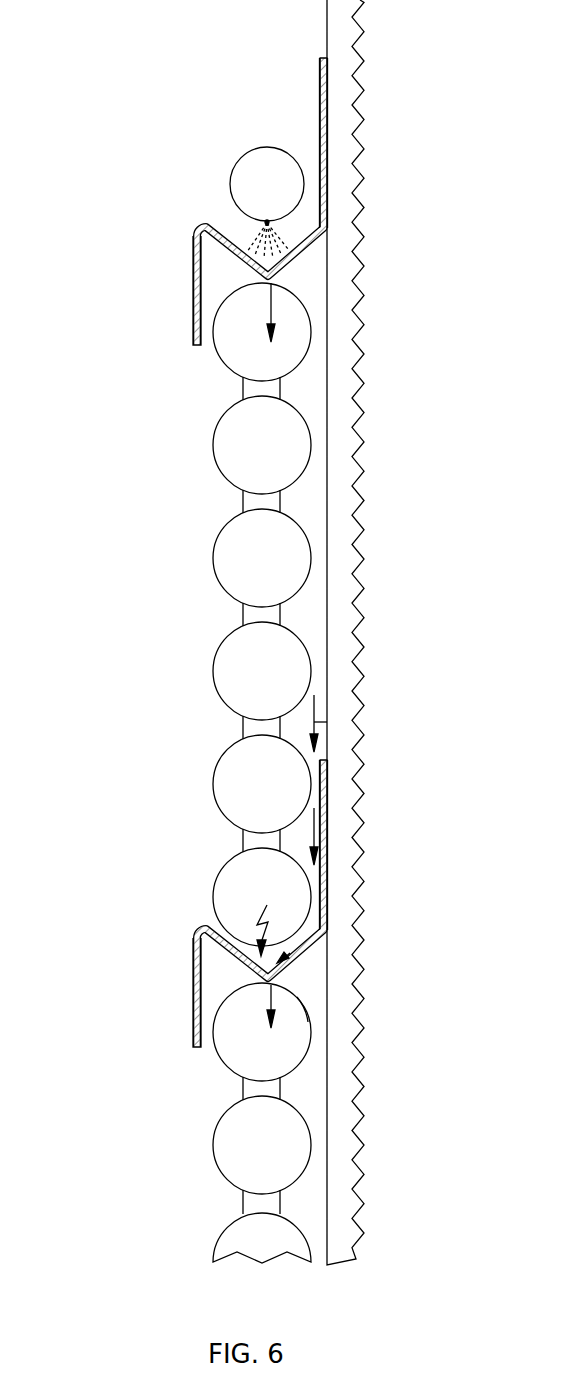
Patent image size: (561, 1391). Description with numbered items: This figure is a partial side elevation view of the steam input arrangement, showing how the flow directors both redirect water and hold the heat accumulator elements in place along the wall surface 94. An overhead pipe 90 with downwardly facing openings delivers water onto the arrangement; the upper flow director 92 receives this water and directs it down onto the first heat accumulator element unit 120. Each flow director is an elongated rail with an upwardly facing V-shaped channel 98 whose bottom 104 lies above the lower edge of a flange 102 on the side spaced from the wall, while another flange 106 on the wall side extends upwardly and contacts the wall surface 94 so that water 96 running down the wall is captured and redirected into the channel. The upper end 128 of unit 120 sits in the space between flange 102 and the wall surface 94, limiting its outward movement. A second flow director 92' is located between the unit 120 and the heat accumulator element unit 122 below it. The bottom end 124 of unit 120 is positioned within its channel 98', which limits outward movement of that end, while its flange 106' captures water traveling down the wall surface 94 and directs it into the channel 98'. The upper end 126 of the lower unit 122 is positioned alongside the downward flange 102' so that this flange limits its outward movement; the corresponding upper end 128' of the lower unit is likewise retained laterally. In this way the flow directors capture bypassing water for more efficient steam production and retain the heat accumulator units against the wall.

The overhead pipe 90 is at (239, 160).
The flow director 92 is at (203, 201).
The flow director 92' is at (203, 903).
The wall surface 94 is at (327, 37).
The water 96 is at (327, 722).
The channel 98 is at (231, 218).
The channel 98' is at (267, 918).
The flange 102 is at (159, 290).
The flange 102' is at (158, 992).
The bottom of the channel 104 is at (278, 290).
The flange 106 is at (283, 143).
The flange 106' is at (377, 834).
The first heat accumulator element unit 120 is at (200, 614).
The heat accumulator element unit 122 is at (201, 1123).
The bottom end 124 is at (224, 874).
The upper end 126 is at (288, 1012).
The upper end 128 is at (233, 342).
The upper end 128' is at (231, 1043).